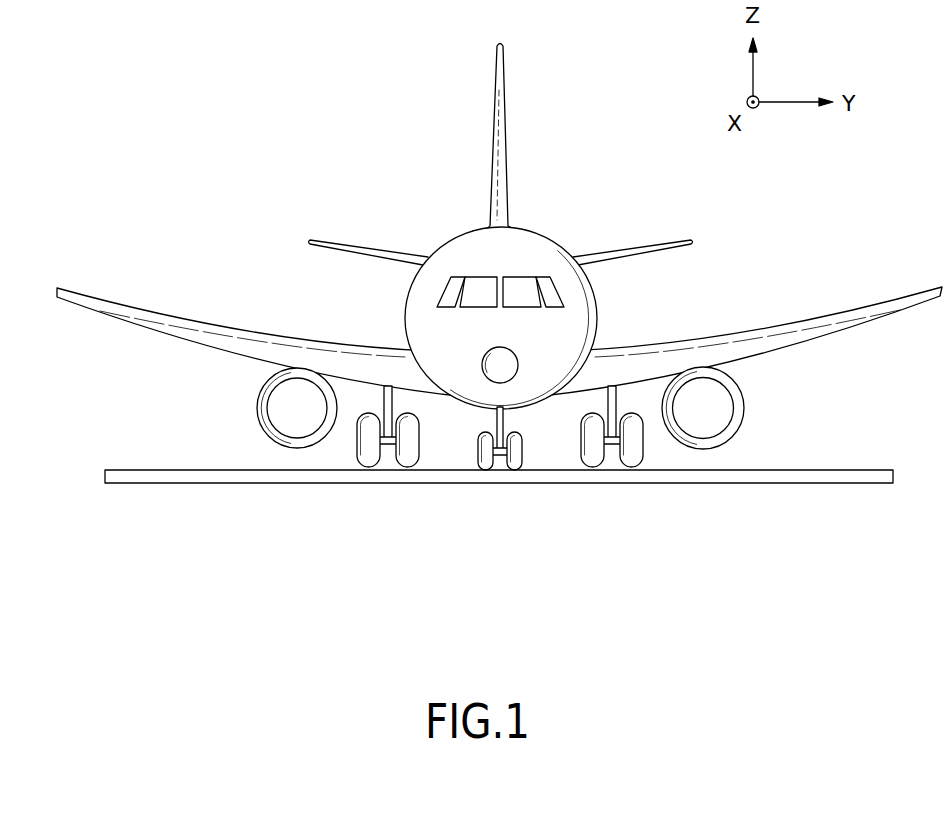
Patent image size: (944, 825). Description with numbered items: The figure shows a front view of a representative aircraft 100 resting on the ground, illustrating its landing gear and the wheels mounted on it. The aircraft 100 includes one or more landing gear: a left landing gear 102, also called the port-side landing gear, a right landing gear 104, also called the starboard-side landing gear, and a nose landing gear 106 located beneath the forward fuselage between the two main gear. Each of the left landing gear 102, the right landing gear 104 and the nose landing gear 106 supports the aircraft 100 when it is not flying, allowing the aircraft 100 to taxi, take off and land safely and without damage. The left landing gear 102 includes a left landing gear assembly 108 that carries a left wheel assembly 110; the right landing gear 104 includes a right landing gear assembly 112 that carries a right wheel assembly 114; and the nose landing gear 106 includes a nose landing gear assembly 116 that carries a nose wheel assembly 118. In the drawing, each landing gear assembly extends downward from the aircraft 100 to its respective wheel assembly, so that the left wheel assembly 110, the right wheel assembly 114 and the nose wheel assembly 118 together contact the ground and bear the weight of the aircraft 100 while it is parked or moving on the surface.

The aircraft 100 is at (337, 132).
The left landing gear 102 is at (686, 468).
The right landing gear 104 is at (334, 430).
The nose landing gear 106 is at (462, 494).
The left landing gear assembly 108 is at (598, 494).
The left wheel assembly 110 is at (611, 447).
The right landing gear assembly 112 is at (382, 430).
The right wheel assembly 114 is at (387, 447).
The nose landing gear assembly 116 is at (507, 413).
The nose wheel assembly 118 is at (500, 456).